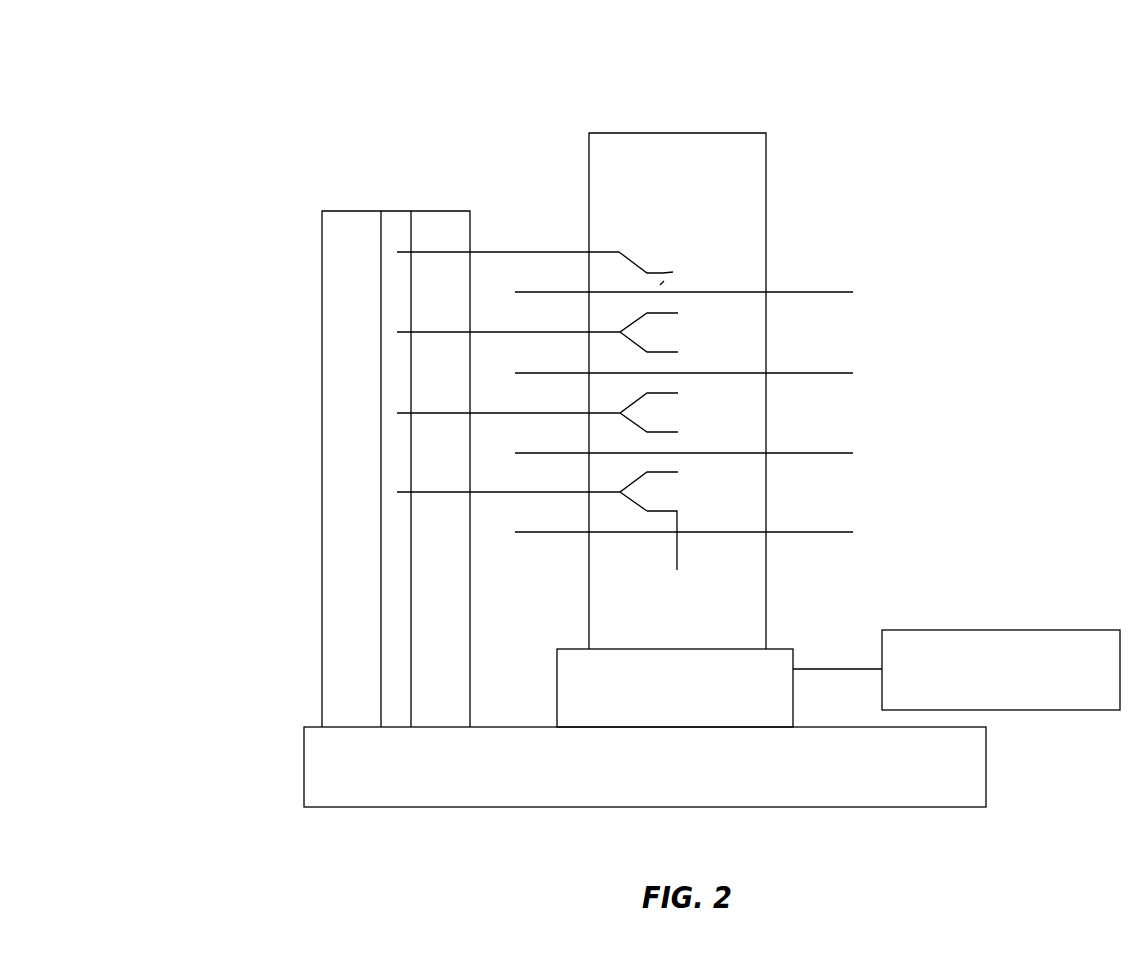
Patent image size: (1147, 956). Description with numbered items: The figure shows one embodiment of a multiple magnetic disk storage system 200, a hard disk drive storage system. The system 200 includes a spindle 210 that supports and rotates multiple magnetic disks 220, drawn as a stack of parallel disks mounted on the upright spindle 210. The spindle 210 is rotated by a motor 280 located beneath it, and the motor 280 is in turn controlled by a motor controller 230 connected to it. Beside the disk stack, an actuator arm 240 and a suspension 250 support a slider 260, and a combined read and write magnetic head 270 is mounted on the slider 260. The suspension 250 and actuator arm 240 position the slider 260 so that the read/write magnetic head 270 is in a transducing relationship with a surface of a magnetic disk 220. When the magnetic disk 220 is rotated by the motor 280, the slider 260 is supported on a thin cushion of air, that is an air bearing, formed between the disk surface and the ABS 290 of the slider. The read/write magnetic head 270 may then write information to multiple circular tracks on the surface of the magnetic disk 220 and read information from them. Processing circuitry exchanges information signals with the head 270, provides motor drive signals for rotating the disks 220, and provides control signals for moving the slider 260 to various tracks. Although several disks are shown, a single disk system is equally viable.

The multiple magnetic disk storage system 200 is at (153, 763).
The spindle 210 is at (752, 133).
The magnetic disks 220 is at (812, 292).
The motor controller 230 is at (1030, 630).
The actuator arm 240 is at (530, 252).
The suspension 250 is at (635, 253).
The slider 260 is at (664, 272).
The read/write magnetic head 270 is at (680, 557).
The motor 280 is at (780, 648).
The ABS 290 is at (662, 283).